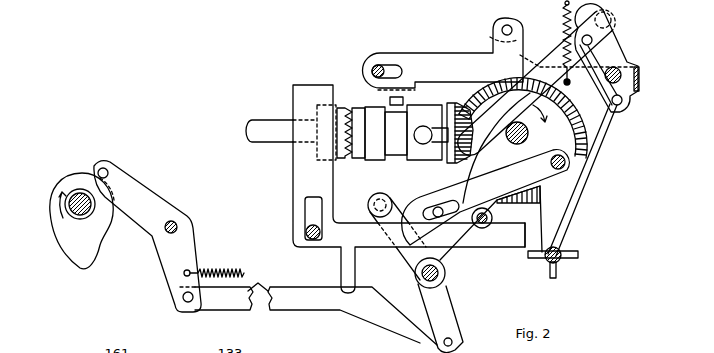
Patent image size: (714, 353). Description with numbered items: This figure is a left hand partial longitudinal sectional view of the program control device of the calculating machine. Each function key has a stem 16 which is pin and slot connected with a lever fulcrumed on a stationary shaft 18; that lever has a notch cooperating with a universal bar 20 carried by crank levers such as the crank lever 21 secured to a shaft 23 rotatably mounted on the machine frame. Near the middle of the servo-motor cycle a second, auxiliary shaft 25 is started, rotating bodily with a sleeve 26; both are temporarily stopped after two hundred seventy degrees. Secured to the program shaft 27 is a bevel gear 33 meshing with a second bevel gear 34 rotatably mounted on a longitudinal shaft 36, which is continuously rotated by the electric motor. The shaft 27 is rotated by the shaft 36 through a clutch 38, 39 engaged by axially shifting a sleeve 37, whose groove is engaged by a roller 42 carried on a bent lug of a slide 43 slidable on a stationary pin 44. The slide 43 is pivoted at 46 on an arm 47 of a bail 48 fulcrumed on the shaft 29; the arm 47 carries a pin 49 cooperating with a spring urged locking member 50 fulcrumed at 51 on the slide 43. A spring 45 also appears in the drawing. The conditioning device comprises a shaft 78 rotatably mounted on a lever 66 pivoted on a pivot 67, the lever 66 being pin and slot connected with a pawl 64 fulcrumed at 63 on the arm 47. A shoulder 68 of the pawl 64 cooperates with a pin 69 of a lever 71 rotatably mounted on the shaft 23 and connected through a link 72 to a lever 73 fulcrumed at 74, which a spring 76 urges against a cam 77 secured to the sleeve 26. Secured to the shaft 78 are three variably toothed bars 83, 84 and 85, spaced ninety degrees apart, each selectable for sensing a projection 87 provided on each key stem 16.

The key stem 16 is at (293, 173).
The stationary shaft 18 is at (302, 236).
The universal bar 20 is at (483, 228).
The crank lever 21 is at (458, 265).
The shaft 23 is at (446, 285).
The auxiliary shaft 25 is at (88, 212).
The sleeve 26 is at (75, 192).
The program shaft 27 is at (528, 133).
The shaft 29 is at (621, 72).
The bevel gear 33 is at (586, 136).
The second bevel gear 34 is at (449, 103).
The longitudinal shaft 36 is at (267, 122).
The sleeve 37 is at (410, 150).
The clutch 38 is at (364, 160).
The clutch 39 is at (344, 107).
The roller 42 is at (390, 100).
The slide 43 is at (445, 62).
The stationary pin 44 is at (374, 66).
The spring 45 is at (567, 43).
The pivot 46 is at (622, 102).
The arm 47 is at (596, 48).
The bail 48 is at (640, 80).
The pin 49 is at (612, 14).
The locking member 50 is at (537, 21).
The fulcrum 51 is at (502, 30).
The fulcrum 63 is at (593, 42).
The pawl 64 is at (493, 137).
The lever 66 is at (498, 200).
The pivot 67 is at (566, 165).
The shoulder 68 is at (430, 200).
The pin 69 is at (368, 208).
The lever 71 is at (405, 252).
The link 72 is at (308, 301).
The lever 73 is at (142, 180).
The fulcrum 74 is at (178, 226).
The spring 76 is at (222, 268).
The cam 77 is at (52, 238).
The shaft 78 is at (568, 235).
The variably toothed bar 83 is at (548, 263).
The variably toothed bar 84 is at (560, 263).
The variably toothed bar 85 is at (578, 254).
The projection 87 is at (522, 242).